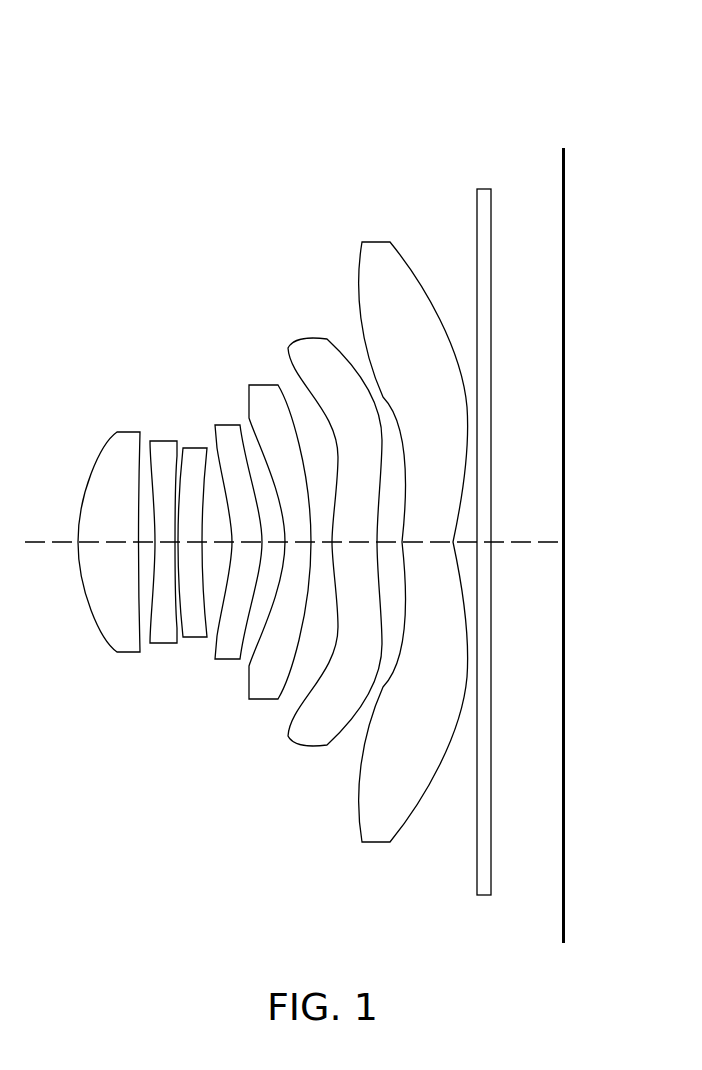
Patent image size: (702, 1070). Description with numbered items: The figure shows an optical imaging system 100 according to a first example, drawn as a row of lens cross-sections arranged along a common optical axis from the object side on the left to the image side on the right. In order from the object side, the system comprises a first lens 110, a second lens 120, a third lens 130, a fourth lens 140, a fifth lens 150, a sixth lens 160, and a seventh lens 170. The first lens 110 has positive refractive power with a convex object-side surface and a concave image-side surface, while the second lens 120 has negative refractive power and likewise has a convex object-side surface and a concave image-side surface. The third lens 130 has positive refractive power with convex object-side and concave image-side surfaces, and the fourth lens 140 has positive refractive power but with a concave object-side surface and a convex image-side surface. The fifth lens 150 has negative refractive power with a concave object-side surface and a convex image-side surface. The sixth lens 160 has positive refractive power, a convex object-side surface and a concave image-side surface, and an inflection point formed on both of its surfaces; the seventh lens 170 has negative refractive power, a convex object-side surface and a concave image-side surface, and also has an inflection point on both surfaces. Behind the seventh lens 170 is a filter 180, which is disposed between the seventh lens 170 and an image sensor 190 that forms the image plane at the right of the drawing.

The optical imaging system 100 is at (269, 150).
The first lens 110 is at (112, 643).
The second lens 120 is at (160, 643).
The third lens 130 is at (197, 637).
The fourth lens 140 is at (223, 657).
The fifth lens 150 is at (250, 385).
The sixth lens 160 is at (293, 345).
The seventh lens 170 is at (372, 244).
The filter 180 is at (482, 187).
The image sensor 190 is at (564, 148).